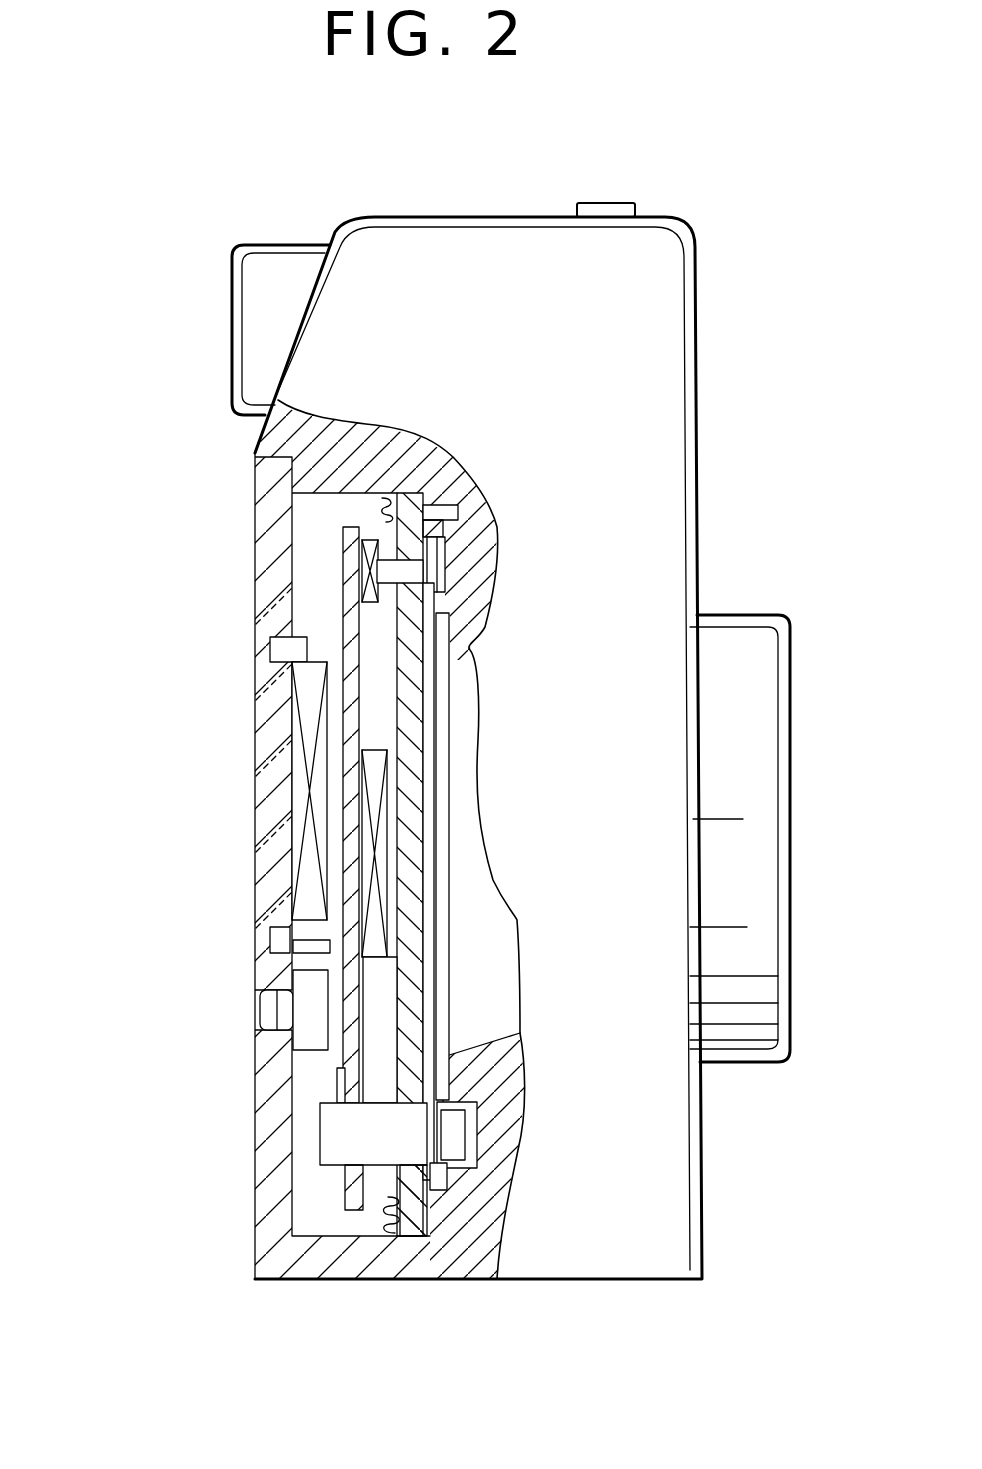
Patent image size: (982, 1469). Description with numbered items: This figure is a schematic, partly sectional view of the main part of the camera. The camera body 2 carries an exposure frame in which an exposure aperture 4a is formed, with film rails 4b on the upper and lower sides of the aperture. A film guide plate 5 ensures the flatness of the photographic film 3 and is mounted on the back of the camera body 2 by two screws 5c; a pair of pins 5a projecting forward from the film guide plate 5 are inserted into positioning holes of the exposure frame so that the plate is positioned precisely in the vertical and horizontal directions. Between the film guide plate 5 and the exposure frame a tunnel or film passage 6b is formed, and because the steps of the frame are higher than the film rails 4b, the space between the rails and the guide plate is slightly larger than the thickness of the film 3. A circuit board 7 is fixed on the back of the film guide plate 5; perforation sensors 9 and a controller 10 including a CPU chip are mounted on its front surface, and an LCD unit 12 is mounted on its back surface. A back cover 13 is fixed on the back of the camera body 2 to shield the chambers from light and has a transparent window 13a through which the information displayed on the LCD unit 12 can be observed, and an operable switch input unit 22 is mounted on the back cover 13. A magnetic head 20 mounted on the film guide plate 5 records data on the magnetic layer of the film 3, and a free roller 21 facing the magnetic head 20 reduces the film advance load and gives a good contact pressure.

The camera body 2 is at (668, 348).
The photographic film 3 is at (437, 771).
The exposure aperture 4a is at (488, 665).
The film rails 4b is at (443, 607).
The film guide plate 5 is at (412, 907).
The pins 5a is at (463, 502).
The screws 5c is at (390, 1238).
The tunnel or film passage 6b is at (470, 1183).
The circuit board 7 is at (343, 567).
The perforation sensors 9 is at (373, 540).
The controller 10 is at (387, 855).
The LCD unit 12 is at (297, 793).
The back cover 13 is at (260, 1107).
The window 13a is at (262, 864).
The magnetic head 20 is at (330, 1143).
The free roller 21 is at (470, 1138).
The operable switch input unit 22 is at (197, 1003).